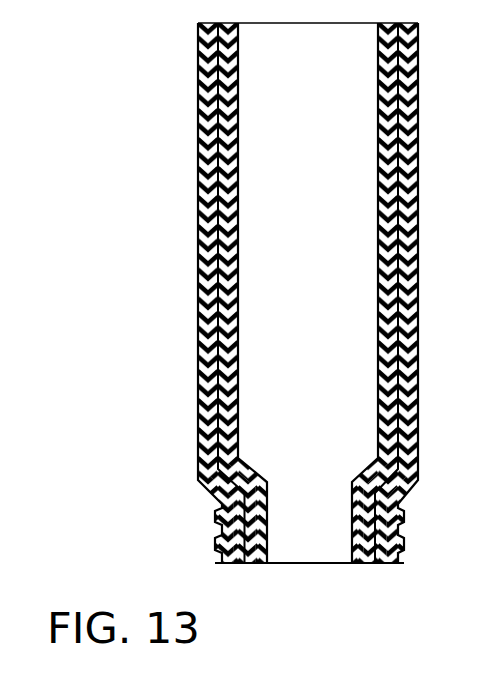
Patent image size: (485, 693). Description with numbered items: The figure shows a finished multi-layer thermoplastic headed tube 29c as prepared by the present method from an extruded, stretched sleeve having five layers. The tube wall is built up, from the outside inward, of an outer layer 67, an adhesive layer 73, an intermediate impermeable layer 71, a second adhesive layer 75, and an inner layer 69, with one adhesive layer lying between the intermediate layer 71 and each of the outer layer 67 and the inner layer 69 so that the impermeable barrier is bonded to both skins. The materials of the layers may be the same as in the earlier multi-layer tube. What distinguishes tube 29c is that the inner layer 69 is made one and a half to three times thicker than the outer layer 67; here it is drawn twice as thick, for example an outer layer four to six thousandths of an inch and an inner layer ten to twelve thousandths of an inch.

The multi-layer thermoplastic headed tube 29c is at (148, 88).
The outer layer 67 is at (198, 226).
The adhesive layer 73 is at (205, 296).
The intermediate impermeable layer 71 is at (215, 356).
The adhesive layer 75 is at (210, 421).
The inner layer 69 is at (267, 565).